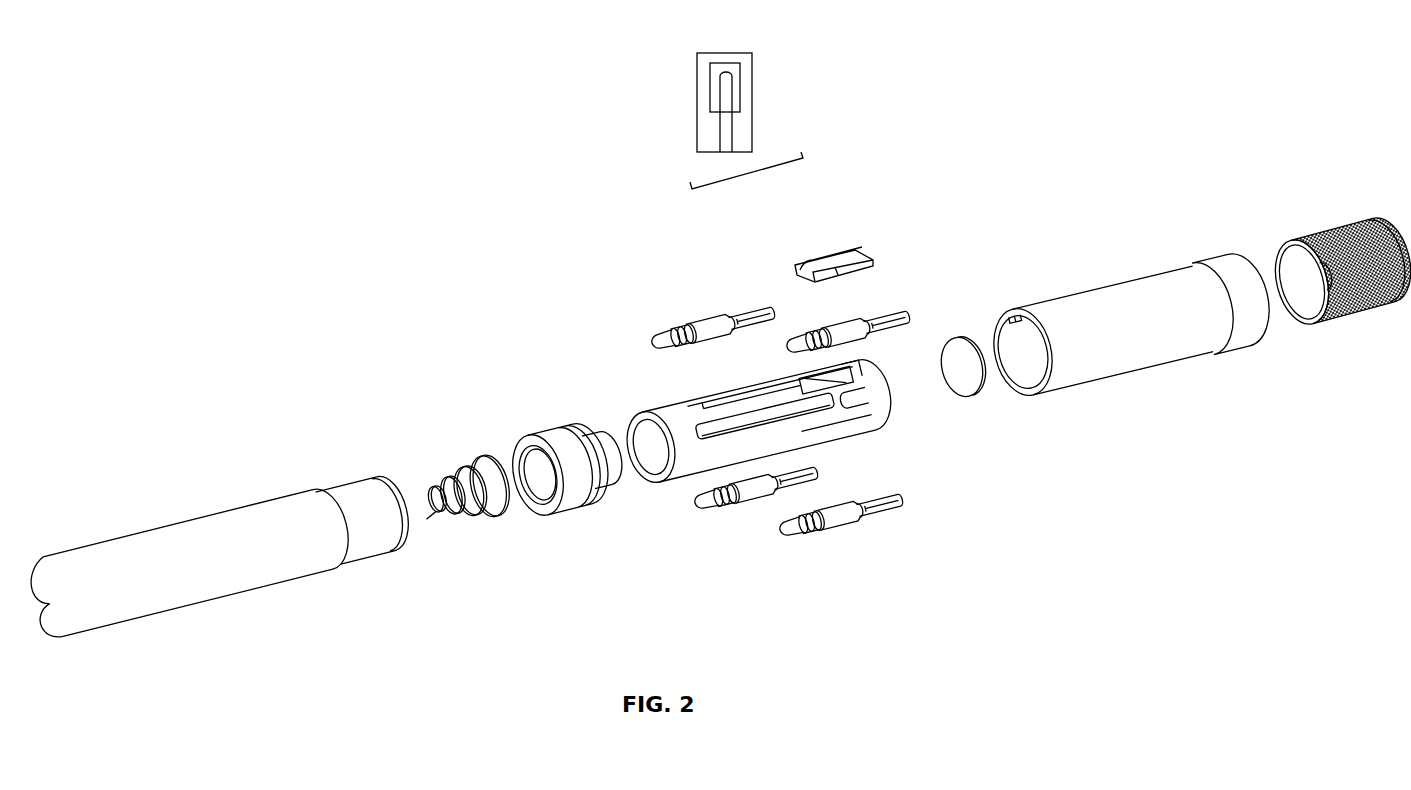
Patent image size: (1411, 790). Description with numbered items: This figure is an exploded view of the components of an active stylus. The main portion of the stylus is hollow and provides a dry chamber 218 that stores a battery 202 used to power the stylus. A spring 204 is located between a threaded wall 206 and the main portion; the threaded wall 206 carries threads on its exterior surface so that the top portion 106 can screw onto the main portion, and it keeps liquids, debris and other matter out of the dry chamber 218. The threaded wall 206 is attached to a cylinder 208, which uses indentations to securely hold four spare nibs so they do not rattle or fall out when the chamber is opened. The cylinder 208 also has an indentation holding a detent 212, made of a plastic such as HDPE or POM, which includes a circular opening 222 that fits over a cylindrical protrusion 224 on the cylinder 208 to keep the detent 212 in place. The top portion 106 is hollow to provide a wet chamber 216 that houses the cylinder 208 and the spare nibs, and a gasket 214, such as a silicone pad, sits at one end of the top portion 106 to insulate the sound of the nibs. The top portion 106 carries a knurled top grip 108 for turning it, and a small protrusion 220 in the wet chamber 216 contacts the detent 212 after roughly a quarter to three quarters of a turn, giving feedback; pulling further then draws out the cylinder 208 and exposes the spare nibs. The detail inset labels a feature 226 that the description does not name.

The top portion 106 is at (1070, 390).
The top grip 108 is at (1345, 313).
The battery 202 is at (345, 483).
The spring 204 is at (453, 477).
The threaded wall 206 is at (540, 432).
The cylinder 208 is at (663, 405).
The detent 212 is at (708, 92).
The gasket 214 is at (963, 337).
The wet chamber 216 is at (1027, 355).
The dry chamber 218 is at (340, 563).
The small protrusion 220 is at (1013, 317).
The circular opening 222 is at (733, 70).
The cylindrical protrusion 224 is at (862, 362).
The groove 226 is at (732, 98).